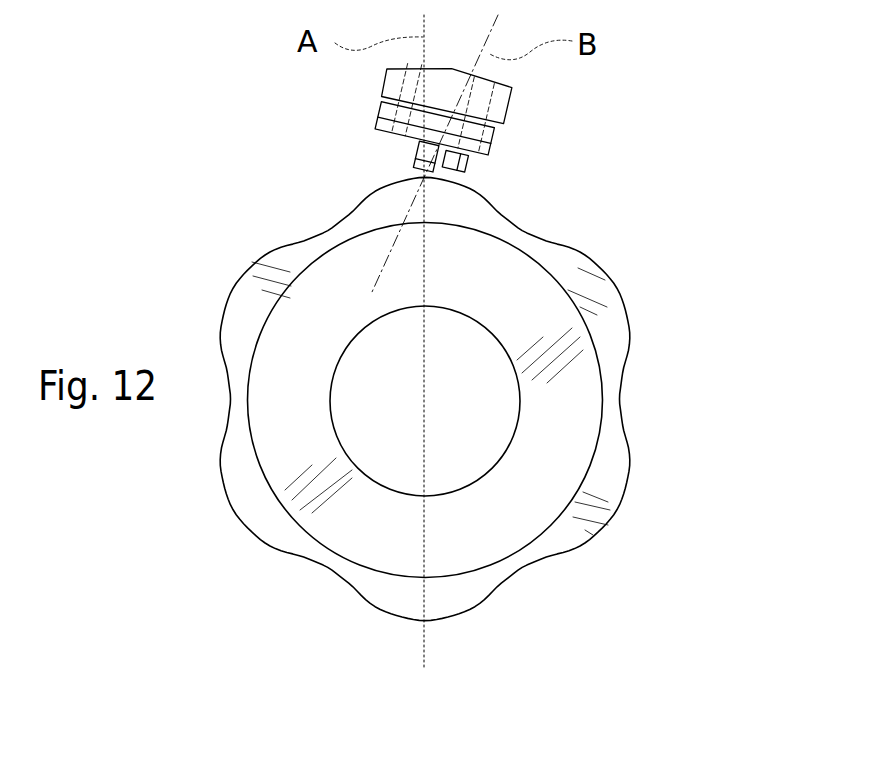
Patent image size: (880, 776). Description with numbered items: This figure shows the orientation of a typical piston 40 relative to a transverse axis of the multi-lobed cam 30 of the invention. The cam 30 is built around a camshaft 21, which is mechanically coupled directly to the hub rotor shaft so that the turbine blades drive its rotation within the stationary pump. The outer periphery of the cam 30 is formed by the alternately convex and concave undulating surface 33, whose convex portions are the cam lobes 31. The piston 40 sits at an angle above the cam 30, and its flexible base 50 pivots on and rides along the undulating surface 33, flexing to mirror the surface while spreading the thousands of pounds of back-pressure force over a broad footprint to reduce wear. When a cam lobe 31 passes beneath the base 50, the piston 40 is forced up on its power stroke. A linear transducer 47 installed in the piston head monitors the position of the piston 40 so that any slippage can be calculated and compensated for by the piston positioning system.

The camshaft 21 is at (497, 462).
The multi-lobed cam 30 is at (436, 398).
The cam lobe 31 is at (240, 518).
The undulating surface 33 is at (627, 380).
The piston 40 is at (543, 129).
The linear transducer 47 is at (559, 173).
The flexible base 50 is at (375, 167).